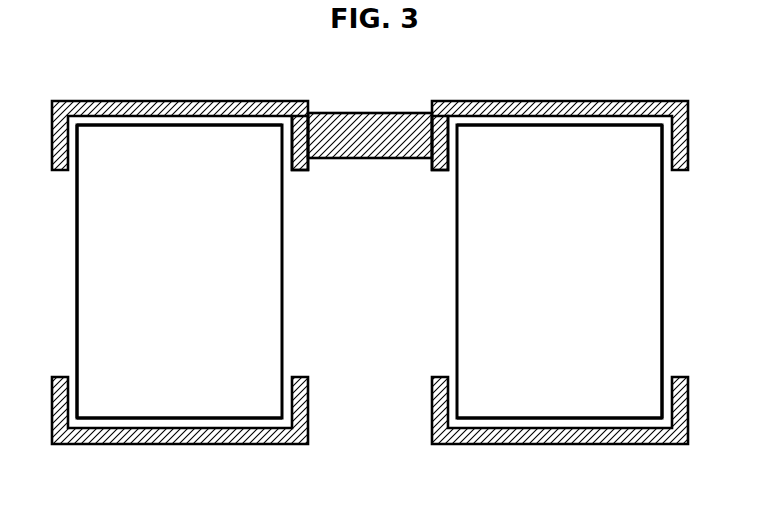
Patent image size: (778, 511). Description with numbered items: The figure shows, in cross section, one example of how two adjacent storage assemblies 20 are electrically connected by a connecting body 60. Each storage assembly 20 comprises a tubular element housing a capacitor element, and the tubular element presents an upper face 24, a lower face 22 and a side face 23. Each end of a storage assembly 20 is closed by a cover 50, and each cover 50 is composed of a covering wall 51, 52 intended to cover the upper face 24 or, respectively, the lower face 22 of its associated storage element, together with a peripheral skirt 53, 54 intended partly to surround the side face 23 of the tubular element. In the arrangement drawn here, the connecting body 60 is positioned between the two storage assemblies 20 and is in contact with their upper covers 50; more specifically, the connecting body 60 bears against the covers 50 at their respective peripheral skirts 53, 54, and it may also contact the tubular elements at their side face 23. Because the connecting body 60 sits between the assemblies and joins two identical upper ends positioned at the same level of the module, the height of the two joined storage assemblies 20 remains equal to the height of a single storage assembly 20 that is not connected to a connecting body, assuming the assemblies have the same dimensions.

The storage assembly 20 is at (96, 330).
The lower face 22 is at (215, 418).
The side face 23 is at (77, 268).
The upper face 24 is at (214, 125).
The cover 50 is at (370, 235).
The covering wall 51 is at (172, 102).
The covering wall 52 is at (562, 103).
The peripheral skirt 53 is at (302, 168).
The peripheral skirt 54 is at (437, 168).
The connecting body 60 is at (368, 122).